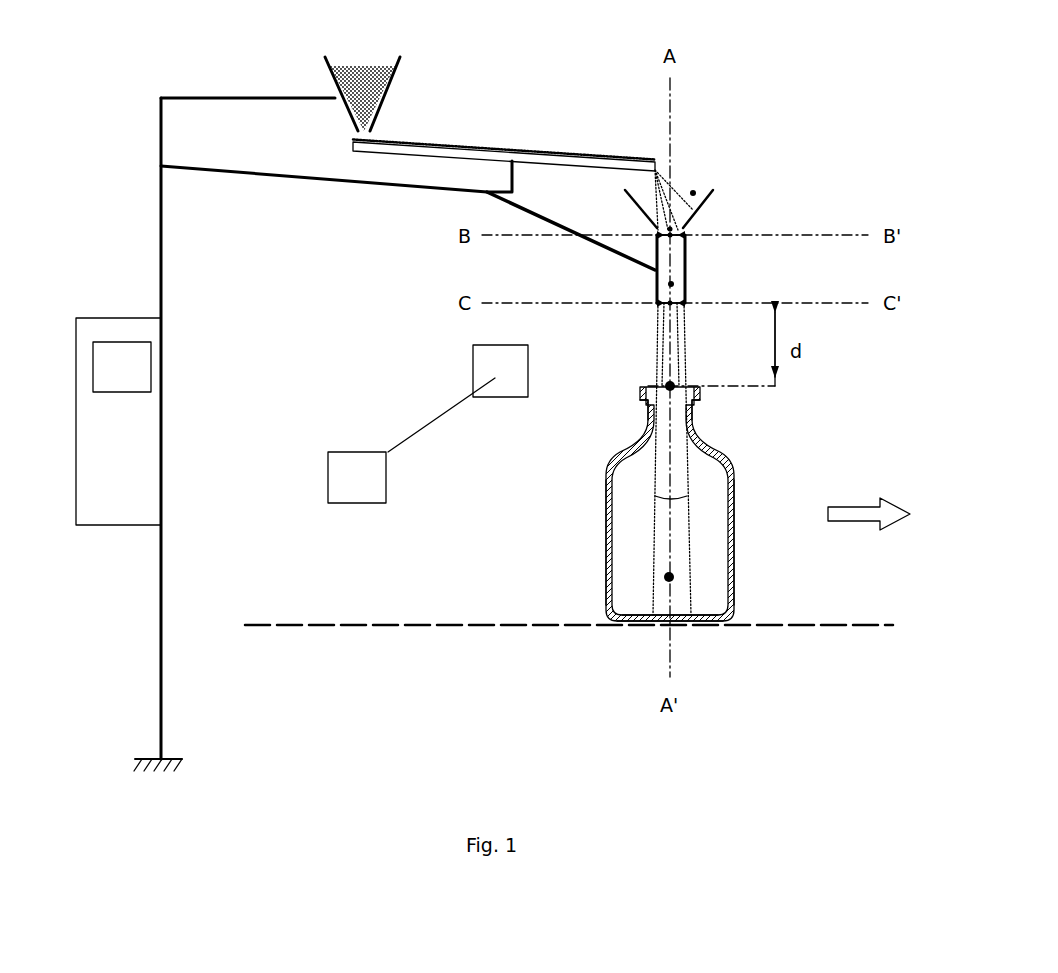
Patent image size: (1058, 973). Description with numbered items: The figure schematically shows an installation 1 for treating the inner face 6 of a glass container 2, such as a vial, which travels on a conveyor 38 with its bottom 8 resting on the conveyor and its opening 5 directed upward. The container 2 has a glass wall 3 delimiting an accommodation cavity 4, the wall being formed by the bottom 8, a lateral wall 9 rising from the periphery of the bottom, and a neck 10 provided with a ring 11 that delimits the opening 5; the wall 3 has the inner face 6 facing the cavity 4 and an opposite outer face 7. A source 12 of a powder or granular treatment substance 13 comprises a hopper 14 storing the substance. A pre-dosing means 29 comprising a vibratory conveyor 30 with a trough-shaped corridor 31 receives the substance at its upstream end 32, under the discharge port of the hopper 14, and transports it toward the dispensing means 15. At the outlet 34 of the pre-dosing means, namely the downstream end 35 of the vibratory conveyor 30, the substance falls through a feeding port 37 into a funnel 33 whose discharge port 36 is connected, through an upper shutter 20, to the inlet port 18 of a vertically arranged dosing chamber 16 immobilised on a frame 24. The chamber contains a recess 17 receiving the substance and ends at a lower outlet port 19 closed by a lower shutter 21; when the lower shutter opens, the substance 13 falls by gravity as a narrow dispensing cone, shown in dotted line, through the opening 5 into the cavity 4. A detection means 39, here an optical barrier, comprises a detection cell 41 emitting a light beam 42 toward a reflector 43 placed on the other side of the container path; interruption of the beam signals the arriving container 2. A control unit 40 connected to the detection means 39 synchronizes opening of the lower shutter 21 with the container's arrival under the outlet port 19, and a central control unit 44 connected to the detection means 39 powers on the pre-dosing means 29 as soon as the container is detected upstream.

The installation 1 is at (168, 74).
The glass container 2 is at (676, 508).
The wall 3 is at (737, 475).
The accommodation cavity 4 is at (666, 577).
The opening 5 is at (668, 386).
The inner face 6 is at (733, 595).
The outer face 7 is at (733, 553).
The bottom 8 is at (703, 625).
The lateral wall 9 is at (607, 532).
The neck 10 is at (646, 413).
The ring 11 is at (700, 400).
The source of treatment substance 12 is at (503, 324).
The treatment substance 13 is at (378, 83).
The hopper 14 is at (401, 64).
The dispensing means 15 is at (636, 109).
The dosing chamber 16 is at (685, 276).
The recess 17 is at (671, 284).
The inlet port 18 is at (687, 233).
The outlet port 19 is at (682, 306).
The upper shutter 20 is at (657, 235).
The lower shutter 21 is at (657, 303).
The frame 24 is at (158, 287).
The pre-dosing means 29 is at (565, 150).
The vibratory conveyor 30 is at (587, 158).
The corridor 31 is at (442, 174).
The upstream end 32 is at (353, 143).
The funnel 33 is at (712, 200).
The outlet of the pre-dosing means 34 is at (655, 163).
The downstream end 35 is at (698, 209).
The discharge port 36 is at (717, 220).
The feeding port 37 is at (707, 199).
The conveyor 38 is at (870, 628).
The detection means 39 is at (362, 510).
The control unit 40 is at (122, 367).
The detection cell 41 is at (357, 477).
The light beam 42 is at (390, 453).
The reflector 43 is at (500, 371).
The central control unit 44 is at (118, 421).